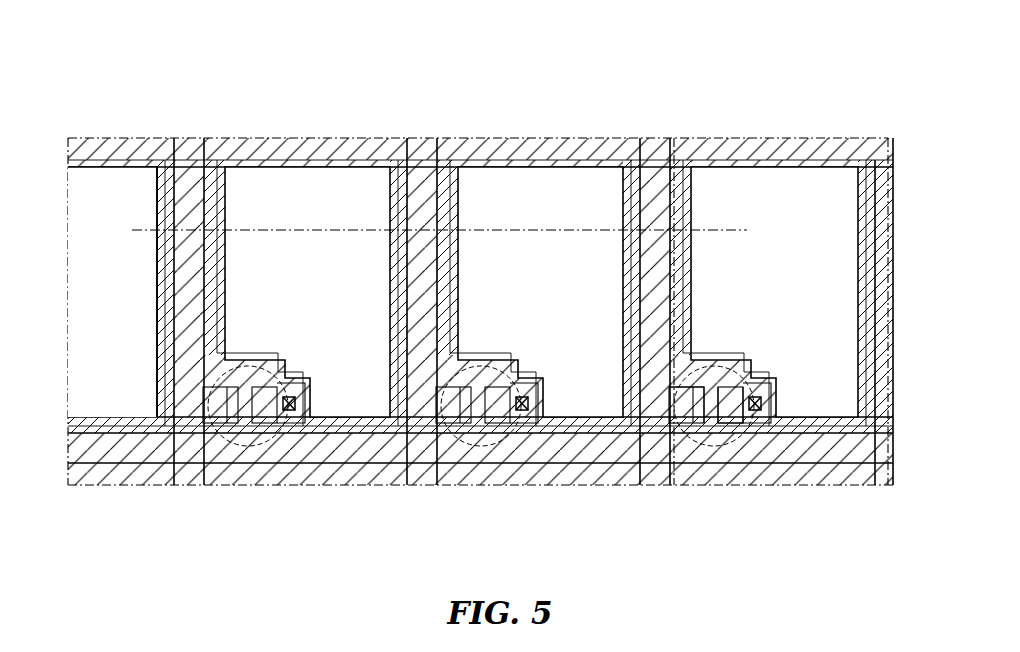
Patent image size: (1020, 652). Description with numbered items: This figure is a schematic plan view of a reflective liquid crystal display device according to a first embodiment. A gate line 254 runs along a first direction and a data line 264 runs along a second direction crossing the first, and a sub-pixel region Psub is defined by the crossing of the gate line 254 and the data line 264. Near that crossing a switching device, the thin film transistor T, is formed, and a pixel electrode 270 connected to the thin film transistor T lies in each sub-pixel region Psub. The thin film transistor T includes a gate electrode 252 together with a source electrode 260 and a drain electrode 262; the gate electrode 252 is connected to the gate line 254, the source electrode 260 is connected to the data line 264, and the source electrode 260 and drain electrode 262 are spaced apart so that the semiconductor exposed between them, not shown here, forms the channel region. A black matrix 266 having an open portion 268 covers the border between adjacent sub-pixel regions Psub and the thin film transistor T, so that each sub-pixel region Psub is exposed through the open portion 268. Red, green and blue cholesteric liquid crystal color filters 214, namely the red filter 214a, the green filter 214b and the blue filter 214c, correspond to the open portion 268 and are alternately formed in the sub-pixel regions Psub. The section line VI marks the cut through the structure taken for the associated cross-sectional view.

The cholesteric liquid crystal color filters 214 is at (463, 215).
The red cholesteric liquid crystal color filter 214a is at (112, 177).
The green cholesteric liquid crystal color filter 214b is at (312, 178).
The blue cholesteric liquid crystal color filter 214c is at (526, 178).
The gate electrode 252 is at (719, 384).
The gate line 254 is at (893, 433).
The source electrode 260 is at (697, 382).
The drain electrode 262 is at (757, 395).
The data line 264 is at (672, 140).
The black matrix 266 is at (229, 178).
The open portion 268 is at (85, 180).
The pixel electrode 270 is at (148, 177).
The sub-pixel region Psub is at (821, 138).
The thin film transistor T is at (705, 515).
The section line VI- VI is at (747, 257).